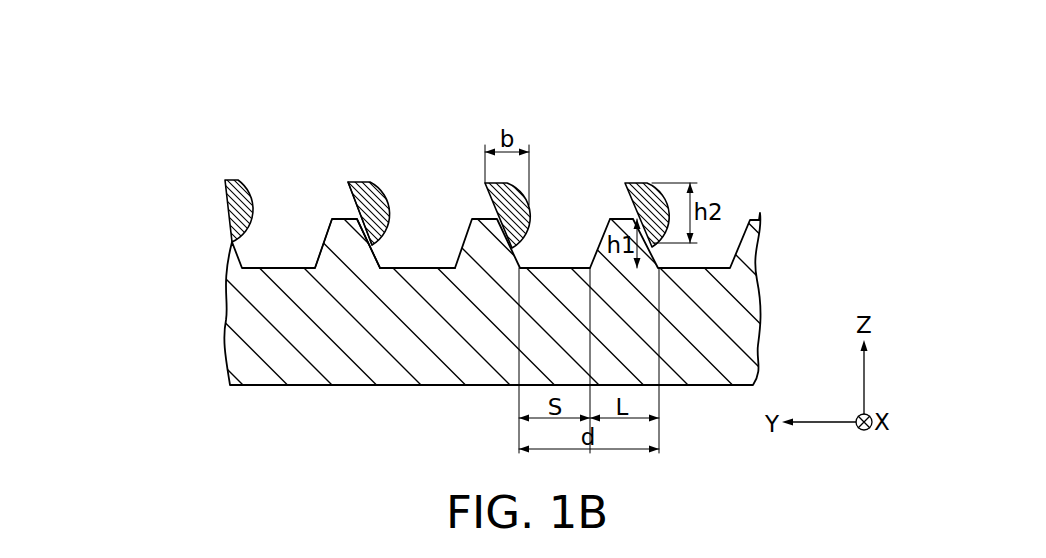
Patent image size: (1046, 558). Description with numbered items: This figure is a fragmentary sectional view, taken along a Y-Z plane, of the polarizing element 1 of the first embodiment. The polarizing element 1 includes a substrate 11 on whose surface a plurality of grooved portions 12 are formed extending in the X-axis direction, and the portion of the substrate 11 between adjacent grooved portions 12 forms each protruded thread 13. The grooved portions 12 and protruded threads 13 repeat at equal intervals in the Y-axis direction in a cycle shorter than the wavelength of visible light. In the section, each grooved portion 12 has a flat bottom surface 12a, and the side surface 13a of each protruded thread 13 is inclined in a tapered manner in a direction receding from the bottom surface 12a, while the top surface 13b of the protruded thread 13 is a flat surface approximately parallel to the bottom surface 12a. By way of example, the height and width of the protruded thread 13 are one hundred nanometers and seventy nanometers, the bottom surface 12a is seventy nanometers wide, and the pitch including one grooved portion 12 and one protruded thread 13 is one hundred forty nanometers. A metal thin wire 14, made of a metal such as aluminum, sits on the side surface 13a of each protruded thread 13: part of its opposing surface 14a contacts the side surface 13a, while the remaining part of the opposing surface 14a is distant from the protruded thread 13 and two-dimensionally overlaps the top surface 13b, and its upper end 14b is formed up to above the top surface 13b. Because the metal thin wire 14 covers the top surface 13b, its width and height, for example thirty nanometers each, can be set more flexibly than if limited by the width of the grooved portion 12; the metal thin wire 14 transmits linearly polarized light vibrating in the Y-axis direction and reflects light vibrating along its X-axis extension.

The polarizing element 1 is at (700, 90).
The substrate 11 is at (760, 328).
The grooved portion 12 is at (426, 245).
The bottom surface 12a is at (433, 266).
The protruded thread 13 is at (348, 258).
The side surface 13a is at (378, 266).
The top surface 13b is at (620, 217).
The metal thin wire 14 is at (380, 192).
The opposing surface 14a is at (355, 203).
The upper end 14b is at (632, 183).